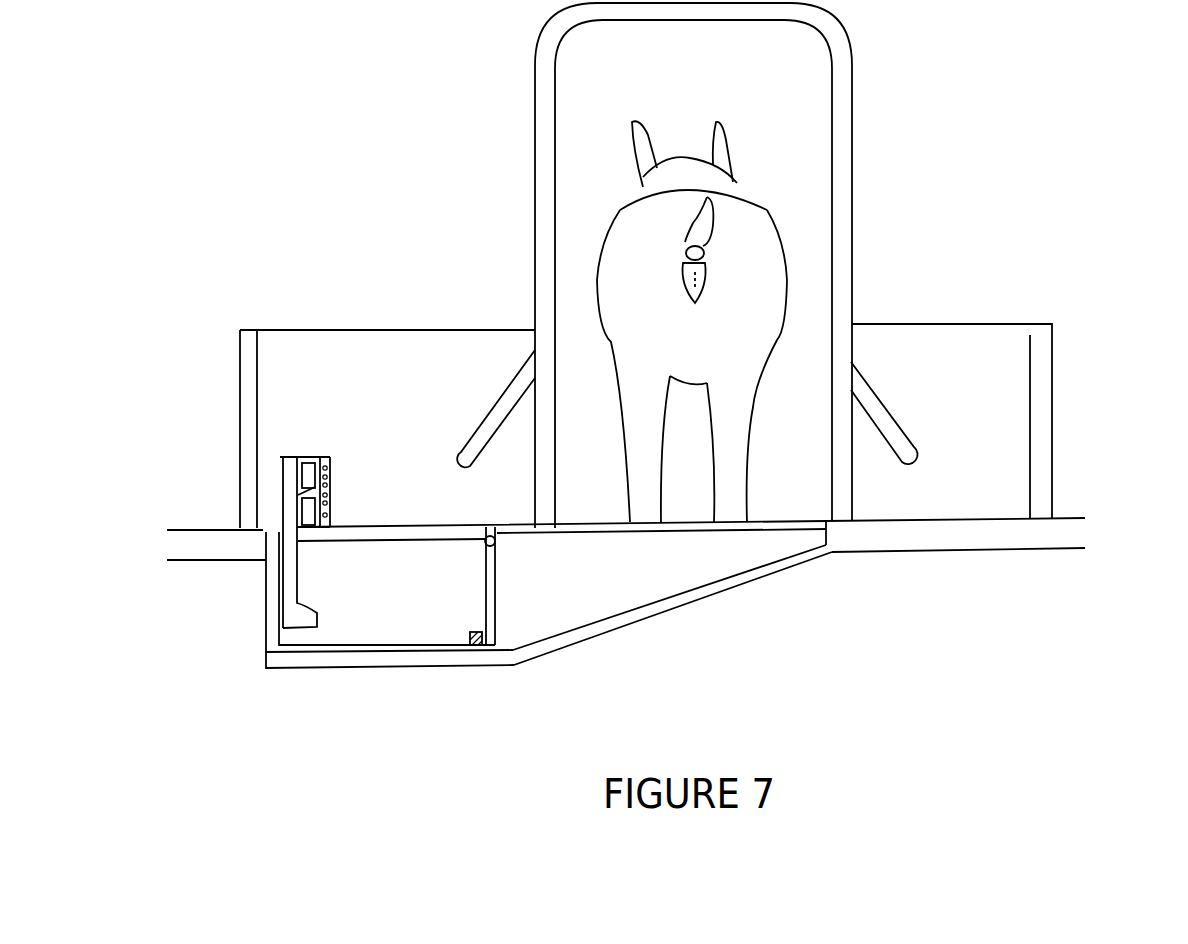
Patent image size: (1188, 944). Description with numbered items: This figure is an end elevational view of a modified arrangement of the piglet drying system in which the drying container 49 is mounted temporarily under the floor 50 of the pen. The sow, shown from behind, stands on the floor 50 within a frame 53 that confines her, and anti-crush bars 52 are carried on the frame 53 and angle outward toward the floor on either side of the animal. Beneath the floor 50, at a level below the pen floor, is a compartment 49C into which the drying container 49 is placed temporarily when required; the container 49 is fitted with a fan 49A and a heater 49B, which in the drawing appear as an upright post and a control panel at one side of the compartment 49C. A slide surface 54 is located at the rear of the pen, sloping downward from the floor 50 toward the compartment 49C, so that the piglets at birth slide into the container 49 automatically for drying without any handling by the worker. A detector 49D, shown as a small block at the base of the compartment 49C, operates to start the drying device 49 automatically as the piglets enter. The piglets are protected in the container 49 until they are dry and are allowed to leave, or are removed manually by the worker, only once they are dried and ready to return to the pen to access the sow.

The drying container 49 is at (335, 645).
The fan 49A is at (305, 457).
The heater 49B is at (330, 468).
The compartment 49C is at (437, 660).
The detector 49D is at (480, 646).
The floor 50 is at (923, 535).
The anti-crush bars 52 is at (905, 425).
The frame 53 is at (838, 232).
The slide surface 54 is at (668, 602).